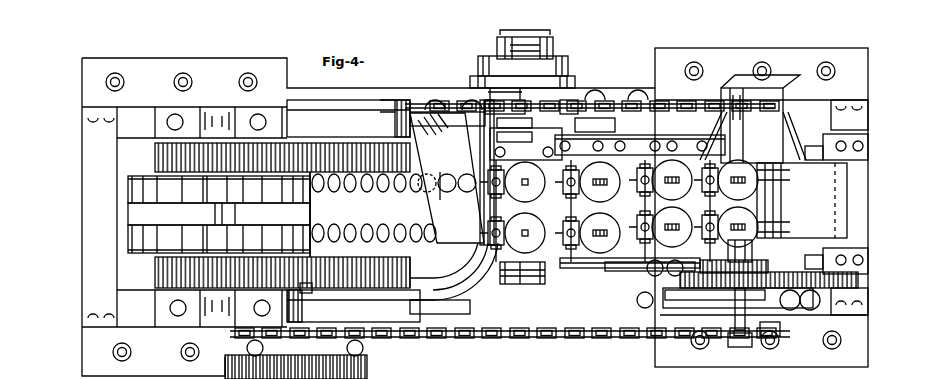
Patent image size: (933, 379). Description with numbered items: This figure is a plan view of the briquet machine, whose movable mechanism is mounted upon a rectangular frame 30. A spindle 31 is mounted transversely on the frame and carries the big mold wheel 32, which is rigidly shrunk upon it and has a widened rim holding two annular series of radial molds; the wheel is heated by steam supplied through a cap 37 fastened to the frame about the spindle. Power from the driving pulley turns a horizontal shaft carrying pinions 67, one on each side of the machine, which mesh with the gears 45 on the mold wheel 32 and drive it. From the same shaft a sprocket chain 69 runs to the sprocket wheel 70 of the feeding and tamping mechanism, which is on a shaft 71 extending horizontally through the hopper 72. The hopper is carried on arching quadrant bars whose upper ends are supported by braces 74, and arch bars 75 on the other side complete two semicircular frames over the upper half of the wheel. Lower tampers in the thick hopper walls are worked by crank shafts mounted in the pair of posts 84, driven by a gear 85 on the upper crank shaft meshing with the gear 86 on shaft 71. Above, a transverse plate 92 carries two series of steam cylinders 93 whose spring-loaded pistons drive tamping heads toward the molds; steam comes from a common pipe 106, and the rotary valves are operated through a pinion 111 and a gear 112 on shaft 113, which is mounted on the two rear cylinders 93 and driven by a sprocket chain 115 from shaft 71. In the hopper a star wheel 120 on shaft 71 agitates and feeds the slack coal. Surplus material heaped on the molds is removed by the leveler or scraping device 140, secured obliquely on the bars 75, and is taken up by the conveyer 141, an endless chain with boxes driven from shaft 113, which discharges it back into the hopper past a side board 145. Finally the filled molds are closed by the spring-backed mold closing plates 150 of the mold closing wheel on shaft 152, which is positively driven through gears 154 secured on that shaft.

The rectangular frame 30 is at (86, 208).
The spindle 31 is at (530, 337).
The mold wheel 32 is at (393, 214).
The cap 37 is at (556, 52).
The gears 45 is at (362, 102).
The pinions 67 is at (297, 143).
The sprocket chain 69 is at (426, 359).
The sprocket wheel 70 is at (762, 336).
The shaft 71 is at (733, 303).
The hopper 72 is at (862, 200).
The braces 74 is at (548, 80).
The arch bars 75 is at (378, 112).
The posts 84 is at (870, 150).
The gear 85 is at (862, 278).
The gear 86 is at (785, 273).
The transverse plate 92 is at (580, 144).
The cylinders 93 is at (760, 195).
The common pipe 106 is at (521, 172).
The pinion 111 is at (690, 270).
The gear 112 is at (749, 262).
The shaft 113 is at (740, 138).
The sprocket chain 115 is at (782, 326).
The star wheel 120 is at (790, 176).
The leveler or scraping device 140 is at (447, 171).
The conveyer 141 is at (600, 100).
The side board 145 is at (775, 85).
The mold closing plates 150 is at (160, 196).
The shaft 152 is at (212, 214).
The gears 154 is at (155, 150).